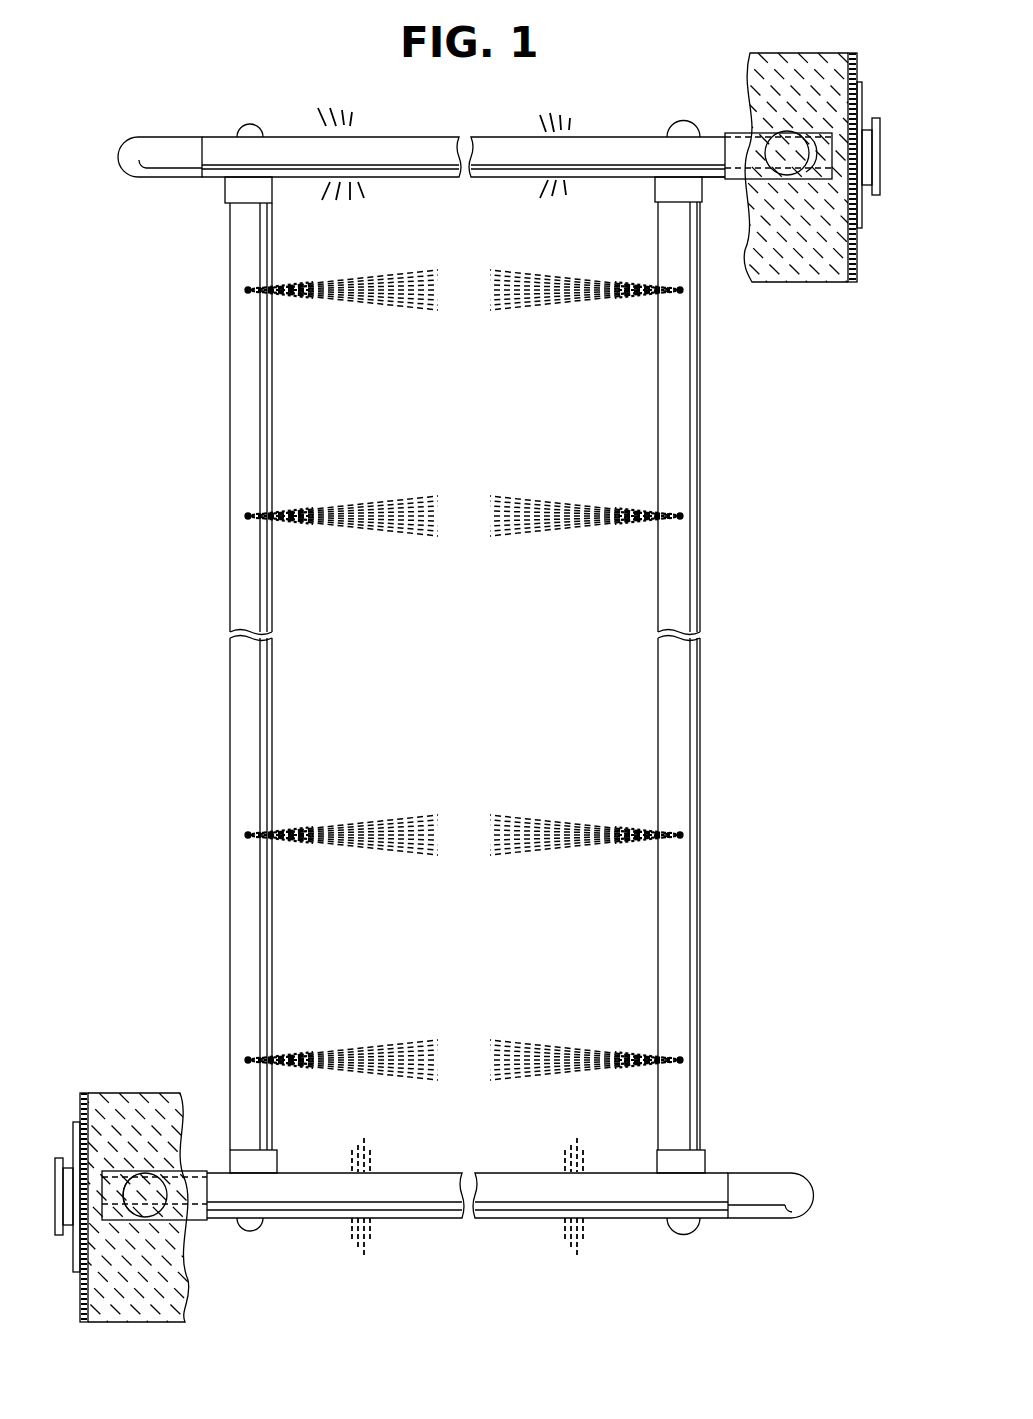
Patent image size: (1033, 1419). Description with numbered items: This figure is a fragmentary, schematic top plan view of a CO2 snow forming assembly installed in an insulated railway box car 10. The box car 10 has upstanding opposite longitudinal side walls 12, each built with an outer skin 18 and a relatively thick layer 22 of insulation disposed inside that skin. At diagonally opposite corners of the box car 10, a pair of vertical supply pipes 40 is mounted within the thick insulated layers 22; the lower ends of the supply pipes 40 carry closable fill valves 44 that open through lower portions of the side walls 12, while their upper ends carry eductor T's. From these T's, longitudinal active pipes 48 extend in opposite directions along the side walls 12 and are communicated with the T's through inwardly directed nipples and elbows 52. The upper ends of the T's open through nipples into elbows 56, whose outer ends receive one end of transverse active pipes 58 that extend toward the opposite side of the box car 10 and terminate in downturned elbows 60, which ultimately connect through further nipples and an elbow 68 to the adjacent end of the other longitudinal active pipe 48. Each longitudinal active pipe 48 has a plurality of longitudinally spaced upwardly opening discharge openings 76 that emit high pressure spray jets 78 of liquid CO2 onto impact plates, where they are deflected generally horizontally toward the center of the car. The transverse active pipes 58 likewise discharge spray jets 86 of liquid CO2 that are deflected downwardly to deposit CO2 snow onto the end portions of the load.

The box car 10 is at (78, 1287).
The longitudinal side wall 12 is at (858, 262).
The outer skin 18 is at (858, 70).
The layer of insulation 22 is at (805, 270).
The vertical supply pipe 40 is at (765, 135).
The closable fill valve 44 is at (803, 55).
The longitudinal active pipe 48 is at (238, 385).
The elbow 52 is at (660, 185).
The elbow 56 is at (740, 172).
The transverse active pipe 58 is at (533, 140).
The downturned elbow 60 is at (140, 138).
The elbow 68 is at (235, 190).
The discharge opening 76 is at (685, 290).
The spray jet 78 is at (353, 266).
The spray jet 86 is at (310, 105).